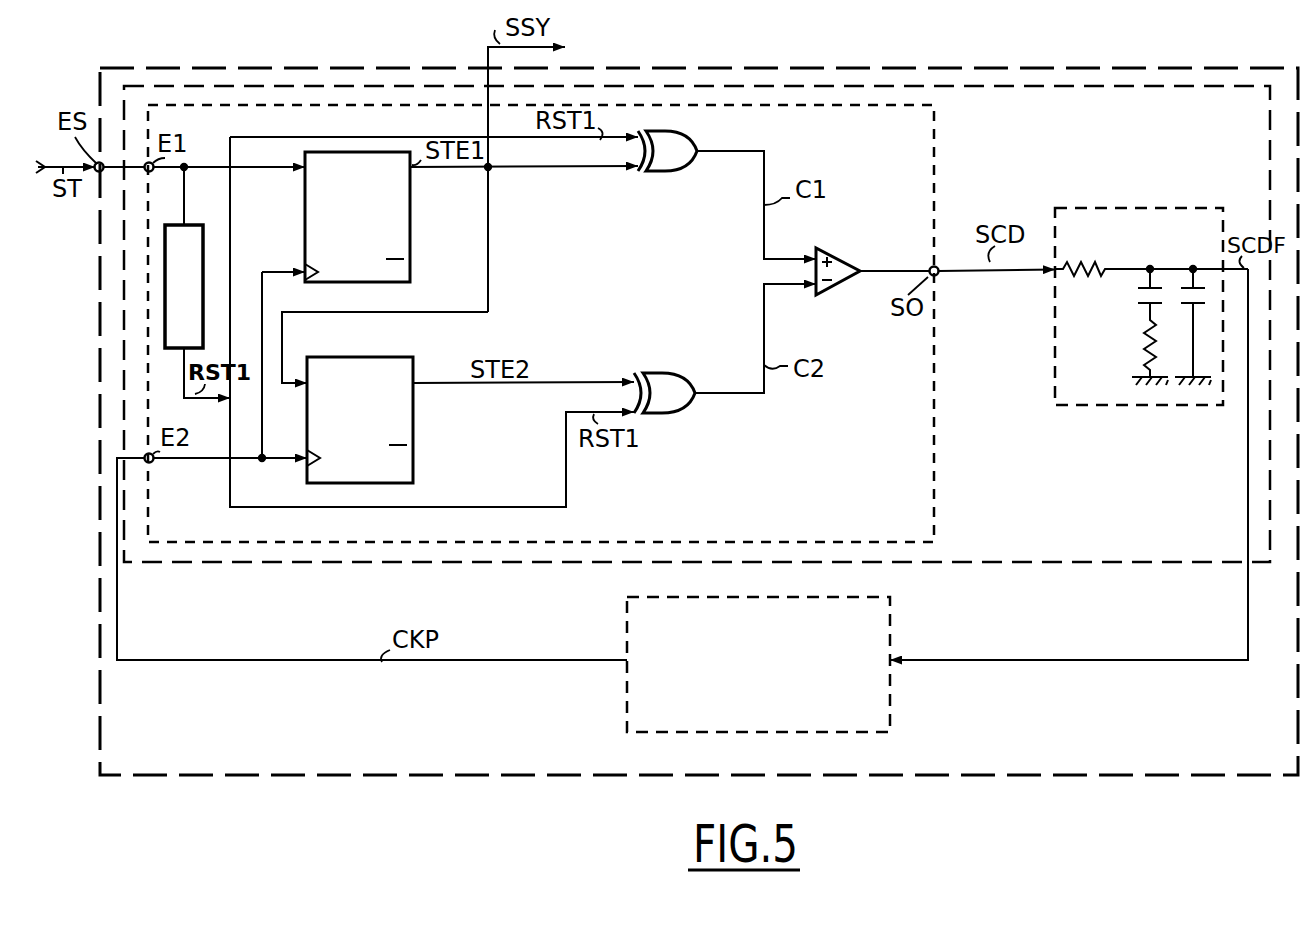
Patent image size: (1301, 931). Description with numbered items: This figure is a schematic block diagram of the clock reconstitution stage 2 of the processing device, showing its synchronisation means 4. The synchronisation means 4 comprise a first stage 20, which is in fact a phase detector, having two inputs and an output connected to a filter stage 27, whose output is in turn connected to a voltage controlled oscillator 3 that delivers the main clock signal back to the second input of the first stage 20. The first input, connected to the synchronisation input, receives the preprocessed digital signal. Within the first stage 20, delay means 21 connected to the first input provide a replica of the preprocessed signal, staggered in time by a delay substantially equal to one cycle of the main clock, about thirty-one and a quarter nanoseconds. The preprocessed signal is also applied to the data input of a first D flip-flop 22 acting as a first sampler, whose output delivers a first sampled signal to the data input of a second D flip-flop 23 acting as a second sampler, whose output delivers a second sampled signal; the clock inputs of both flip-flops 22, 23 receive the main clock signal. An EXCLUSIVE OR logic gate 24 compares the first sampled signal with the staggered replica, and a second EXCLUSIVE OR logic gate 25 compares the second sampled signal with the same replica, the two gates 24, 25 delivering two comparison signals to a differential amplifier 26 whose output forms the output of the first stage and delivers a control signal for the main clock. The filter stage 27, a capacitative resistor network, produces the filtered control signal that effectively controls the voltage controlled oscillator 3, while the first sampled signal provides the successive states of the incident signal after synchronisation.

The clock reconstitution stage 2 is at (1087, 66).
The synchronisation means 4 is at (1222, 88).
The first stage 20 is at (936, 162).
The delay means 21 is at (203, 262).
The first D flip-flop 22 is at (410, 236).
The second D flip-flop 23 is at (413, 440).
The EXCLUSIVE OR logic gate 24 is at (690, 136).
The second EXCLUSIVE OR logic gate 25 is at (684, 410).
The differential amplifier 26 is at (842, 254).
The filter stage 27 is at (1180, 192).
The voltage controlled oscillator 3 is at (890, 731).